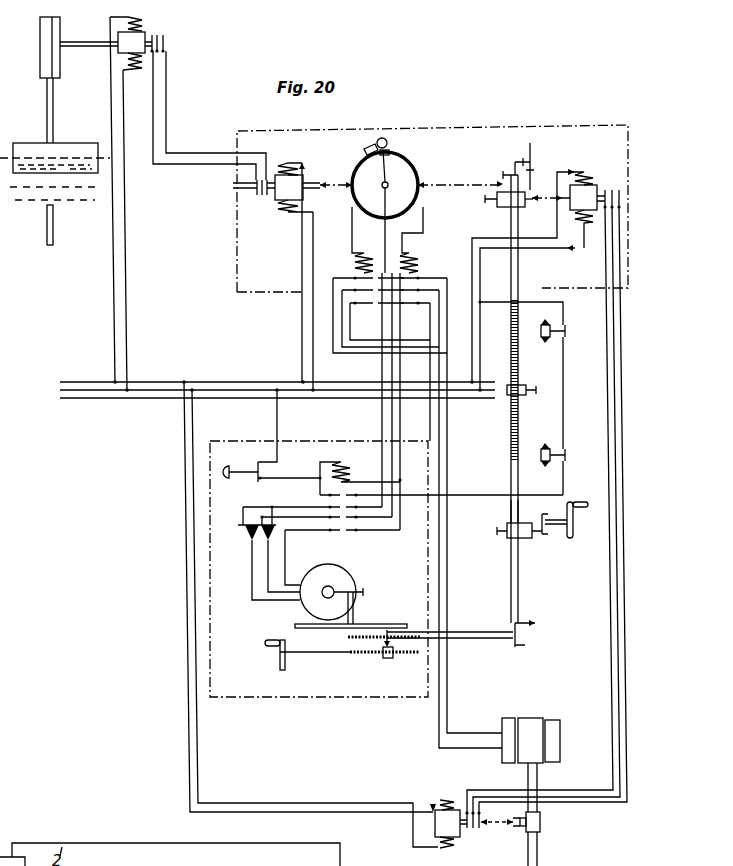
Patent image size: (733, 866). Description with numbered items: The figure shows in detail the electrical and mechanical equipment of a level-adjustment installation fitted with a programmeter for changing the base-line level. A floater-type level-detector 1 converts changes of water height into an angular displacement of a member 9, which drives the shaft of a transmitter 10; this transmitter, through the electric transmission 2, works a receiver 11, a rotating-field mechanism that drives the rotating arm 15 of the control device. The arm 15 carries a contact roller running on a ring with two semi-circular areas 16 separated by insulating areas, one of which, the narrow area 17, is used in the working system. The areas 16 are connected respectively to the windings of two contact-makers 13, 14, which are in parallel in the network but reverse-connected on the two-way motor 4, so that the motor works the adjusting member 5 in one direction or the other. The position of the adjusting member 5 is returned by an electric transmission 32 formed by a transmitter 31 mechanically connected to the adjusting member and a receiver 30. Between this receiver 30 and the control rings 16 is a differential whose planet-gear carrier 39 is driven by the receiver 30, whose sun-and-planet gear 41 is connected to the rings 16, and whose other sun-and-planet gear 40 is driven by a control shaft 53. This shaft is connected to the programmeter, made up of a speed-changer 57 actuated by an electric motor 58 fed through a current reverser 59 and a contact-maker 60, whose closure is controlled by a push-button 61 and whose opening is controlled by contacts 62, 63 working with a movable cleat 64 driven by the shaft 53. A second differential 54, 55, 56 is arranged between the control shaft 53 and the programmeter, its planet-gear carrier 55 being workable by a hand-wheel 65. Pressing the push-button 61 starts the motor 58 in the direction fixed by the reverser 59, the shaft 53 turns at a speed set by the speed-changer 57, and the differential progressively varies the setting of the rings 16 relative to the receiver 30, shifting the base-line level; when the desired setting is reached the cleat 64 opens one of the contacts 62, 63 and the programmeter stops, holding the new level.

The level-detector 1 is at (42, 58).
The member 9 is at (81, 42).
The transmitter 10 is at (138, 36).
The electric transmission 2 is at (185, 153).
The receiver 11 is at (284, 195).
The contact-maker 13 is at (356, 263).
The contact-maker 14 is at (414, 266).
The rotating arm 15 is at (368, 147).
The semi-circular areas 16 is at (417, 166).
The insulating area 17 is at (396, 153).
The receiver 30 is at (586, 192).
The transmitter 31 is at (452, 812).
The electric transmission 32 is at (622, 654).
The planet-gear carrier 39 is at (485, 201).
The sun-and-planet gear 40 is at (518, 207).
The sun-and-planet gear 41 is at (503, 188).
The motor 4 is at (534, 724).
The adjusting member 5 is at (541, 864).
The control shaft 53 is at (516, 279).
The differential 54 is at (512, 524).
The planet-gear carrier 55 is at (497, 533).
The differential 56 is at (526, 538).
The speed-changer 57 is at (388, 659).
The electric motor 58 is at (345, 575).
The current reverser 59 is at (249, 540).
The contact-maker 60 is at (345, 466).
The push-button 61 is at (226, 465).
The contact 62 is at (556, 450).
The contact 63 is at (551, 341).
The movable cleat 64 is at (511, 396).
The hand-wheel 65 is at (573, 521).